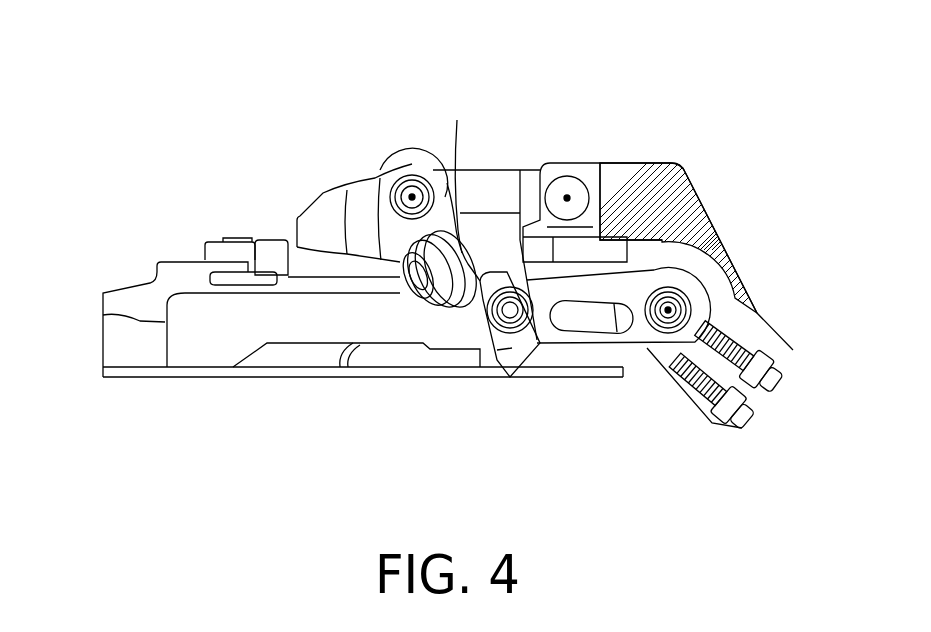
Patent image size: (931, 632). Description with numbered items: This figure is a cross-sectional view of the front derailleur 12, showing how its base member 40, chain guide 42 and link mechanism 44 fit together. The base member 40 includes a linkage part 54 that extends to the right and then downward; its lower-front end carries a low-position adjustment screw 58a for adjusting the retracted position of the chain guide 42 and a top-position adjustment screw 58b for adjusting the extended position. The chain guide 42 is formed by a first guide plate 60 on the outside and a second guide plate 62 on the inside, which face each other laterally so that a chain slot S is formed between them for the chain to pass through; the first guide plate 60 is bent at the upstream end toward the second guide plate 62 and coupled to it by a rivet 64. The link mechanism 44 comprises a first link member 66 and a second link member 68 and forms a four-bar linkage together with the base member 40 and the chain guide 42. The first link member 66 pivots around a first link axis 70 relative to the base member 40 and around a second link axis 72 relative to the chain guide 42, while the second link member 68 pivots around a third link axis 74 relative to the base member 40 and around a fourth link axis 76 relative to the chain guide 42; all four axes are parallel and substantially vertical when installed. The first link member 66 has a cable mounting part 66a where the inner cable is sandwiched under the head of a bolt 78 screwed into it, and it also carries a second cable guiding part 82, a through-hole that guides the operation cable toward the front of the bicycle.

The front derailleur 12 is at (303, 152).
The base member 40 is at (702, 207).
The chain guide 42 is at (190, 380).
The link mechanism 44 is at (528, 133).
The linkage part 54 is at (630, 163).
The low-position adjustment screw 58a is at (778, 392).
The top-position adjustment screw 58b is at (747, 426).
The first guide plate 60 is at (278, 378).
The second guide plate 62 is at (275, 240).
The rivet 64 is at (243, 237).
The first link member 66 is at (483, 185).
The cable mounting part 66a is at (451, 169).
The second link member 68 is at (586, 338).
The first link axis 70 is at (568, 196).
The second link axis 72 is at (410, 192).
The third link axis 74 is at (689, 299).
The fourth link axis 76 is at (500, 312).
The bolt 78 is at (412, 290).
The second cable guiding part 82 is at (507, 380).
The chain slot S is at (195, 322).